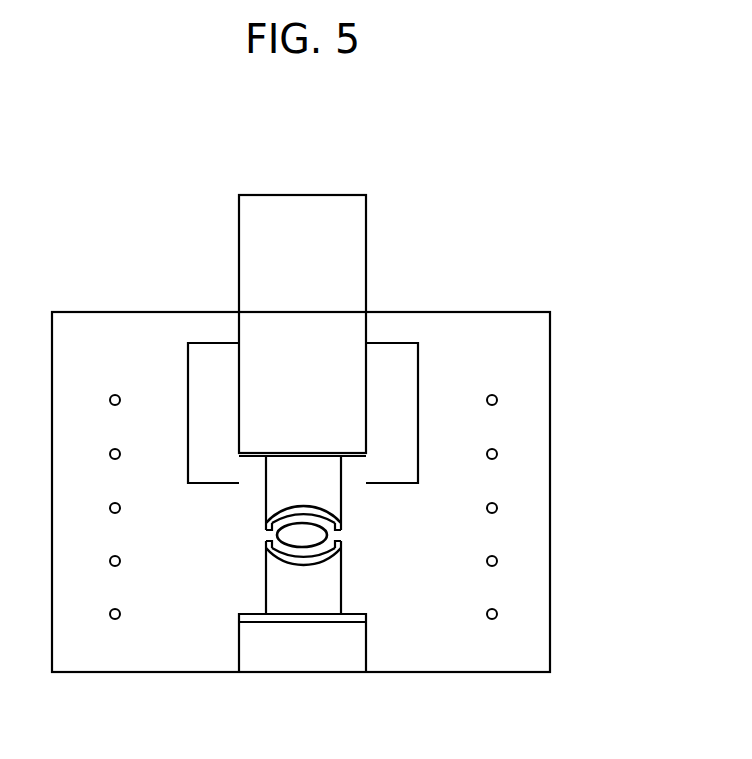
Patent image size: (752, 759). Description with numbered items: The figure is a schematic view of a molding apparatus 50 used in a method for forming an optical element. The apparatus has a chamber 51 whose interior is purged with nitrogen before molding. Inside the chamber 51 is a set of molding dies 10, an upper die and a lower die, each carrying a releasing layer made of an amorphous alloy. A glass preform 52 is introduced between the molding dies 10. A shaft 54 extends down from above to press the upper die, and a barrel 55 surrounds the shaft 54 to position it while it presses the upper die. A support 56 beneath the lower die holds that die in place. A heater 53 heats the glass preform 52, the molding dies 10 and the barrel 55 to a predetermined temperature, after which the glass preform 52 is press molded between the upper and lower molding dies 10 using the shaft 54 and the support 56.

The molding dies 10 is at (275, 582).
The molding apparatus 50 is at (496, 293).
The chamber 51 is at (533, 377).
The glass preform 52 is at (328, 537).
The heater 53 is at (497, 506).
The shaft 54 is at (345, 264).
The barrel 55 is at (210, 357).
The support 56 is at (310, 664).